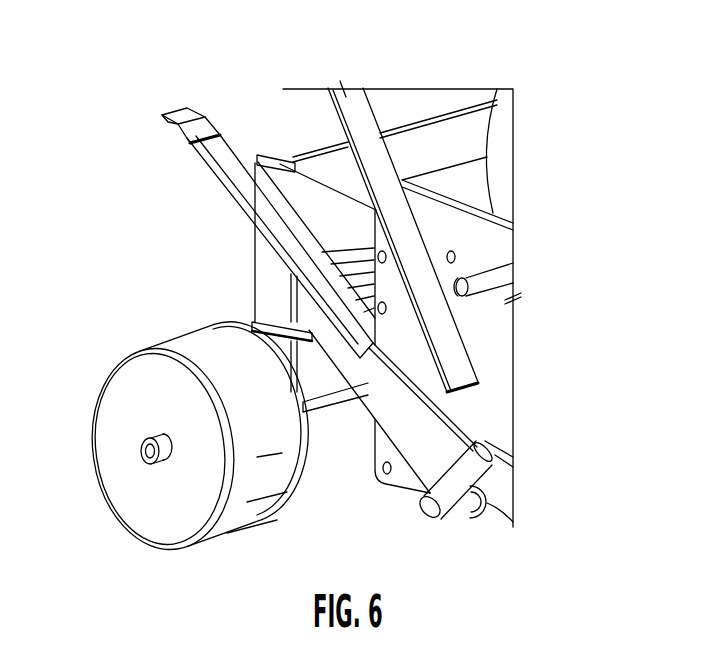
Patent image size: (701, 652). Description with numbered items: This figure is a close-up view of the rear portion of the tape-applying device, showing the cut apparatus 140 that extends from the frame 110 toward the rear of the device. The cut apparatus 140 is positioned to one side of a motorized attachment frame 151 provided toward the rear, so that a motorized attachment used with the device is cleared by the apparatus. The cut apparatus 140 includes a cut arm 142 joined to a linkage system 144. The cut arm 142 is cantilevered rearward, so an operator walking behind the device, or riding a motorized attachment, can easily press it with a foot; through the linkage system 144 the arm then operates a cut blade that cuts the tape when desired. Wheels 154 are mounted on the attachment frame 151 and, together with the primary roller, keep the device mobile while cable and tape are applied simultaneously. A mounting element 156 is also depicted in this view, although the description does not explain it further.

The frame 110 is at (513, 367).
The cut apparatus 140 is at (322, 317).
The cut arm 142 is at (178, 113).
The linkage system 144 is at (514, 524).
The motorized attachment frame 151 is at (305, 152).
The wheels 154 is at (112, 367).
The post bracket 156 is at (265, 155).